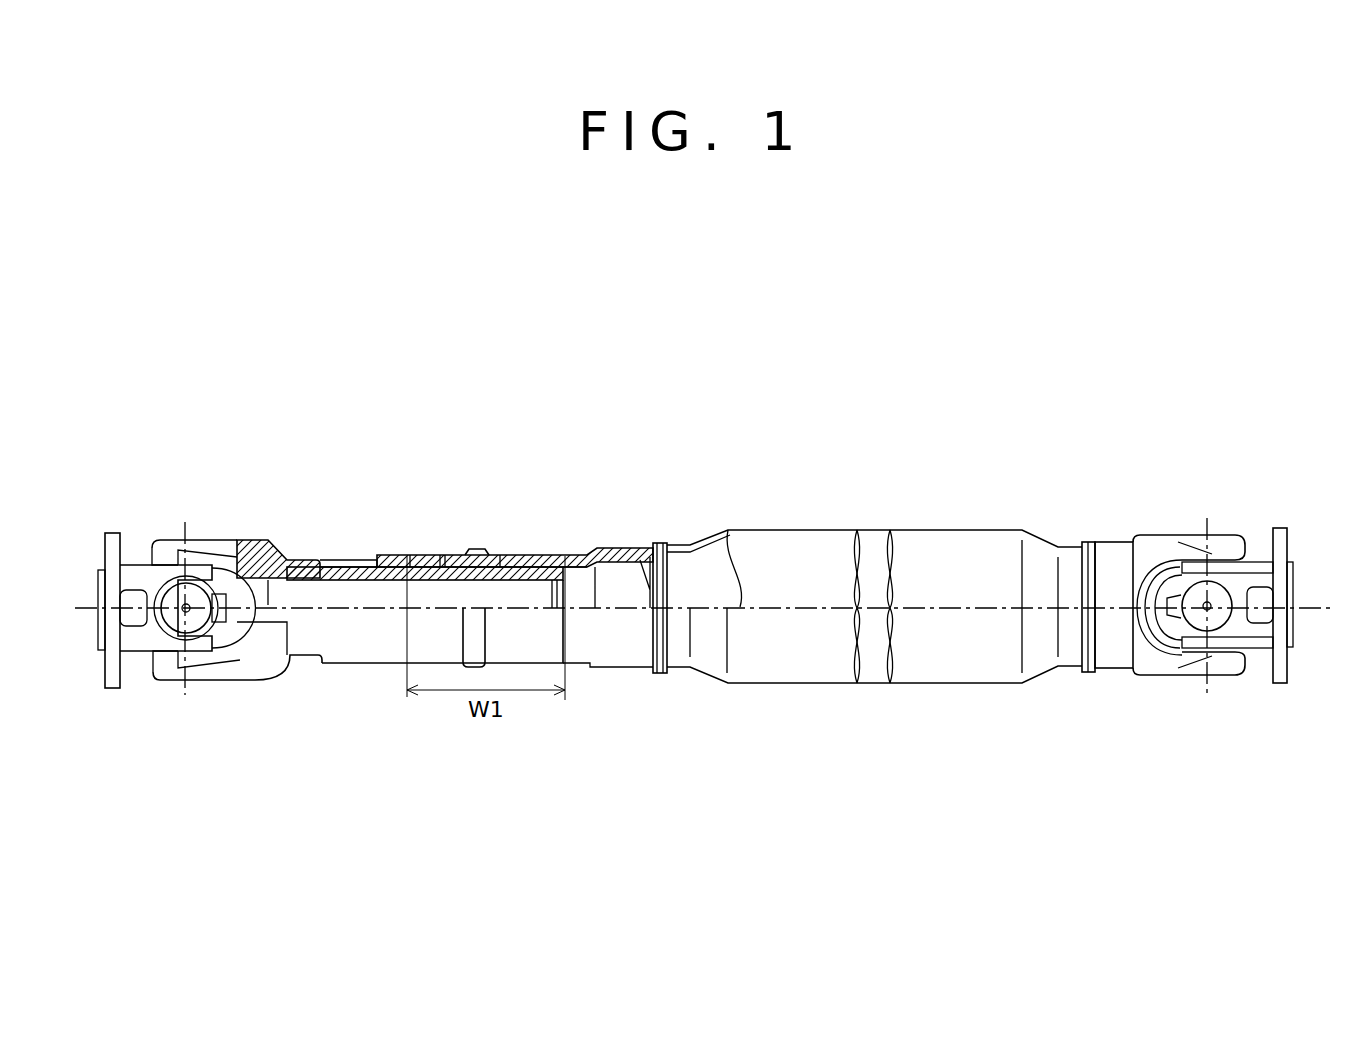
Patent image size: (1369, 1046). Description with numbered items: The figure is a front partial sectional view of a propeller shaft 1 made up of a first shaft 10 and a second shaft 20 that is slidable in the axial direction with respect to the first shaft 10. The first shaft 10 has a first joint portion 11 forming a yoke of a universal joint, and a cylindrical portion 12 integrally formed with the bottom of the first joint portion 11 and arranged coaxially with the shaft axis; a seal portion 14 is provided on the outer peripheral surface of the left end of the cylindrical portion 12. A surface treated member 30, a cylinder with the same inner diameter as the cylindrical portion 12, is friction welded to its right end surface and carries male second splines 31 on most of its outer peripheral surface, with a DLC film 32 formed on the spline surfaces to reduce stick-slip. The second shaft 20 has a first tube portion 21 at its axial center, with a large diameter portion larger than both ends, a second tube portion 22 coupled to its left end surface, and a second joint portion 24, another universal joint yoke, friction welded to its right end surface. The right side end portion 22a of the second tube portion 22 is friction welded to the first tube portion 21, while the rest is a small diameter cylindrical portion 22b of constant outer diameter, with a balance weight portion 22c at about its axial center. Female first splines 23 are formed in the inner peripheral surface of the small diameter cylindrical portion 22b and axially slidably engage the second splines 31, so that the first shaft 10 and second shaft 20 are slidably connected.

The propeller shaft 1 is at (1005, 400).
The first shaft 10 is at (250, 537).
The first joint portion 11 is at (250, 680).
The cylindrical portion 12 is at (303, 650).
The seal portion 14 is at (297, 548).
The second shaft 20 is at (874, 554).
The first tube portion 21 is at (955, 545).
The second tube portion 22 is at (479, 624).
The right side end portion 22a is at (628, 665).
The small diameter cylindrical portion 22b is at (372, 645).
The balance weight portion 22c is at (472, 668).
The first splines 23 is at (492, 551).
The second joint portion 24 is at (1130, 555).
The surface treated member 30 is at (388, 560).
The second splines 31 is at (425, 560).
The DLC film 32 is at (462, 555).